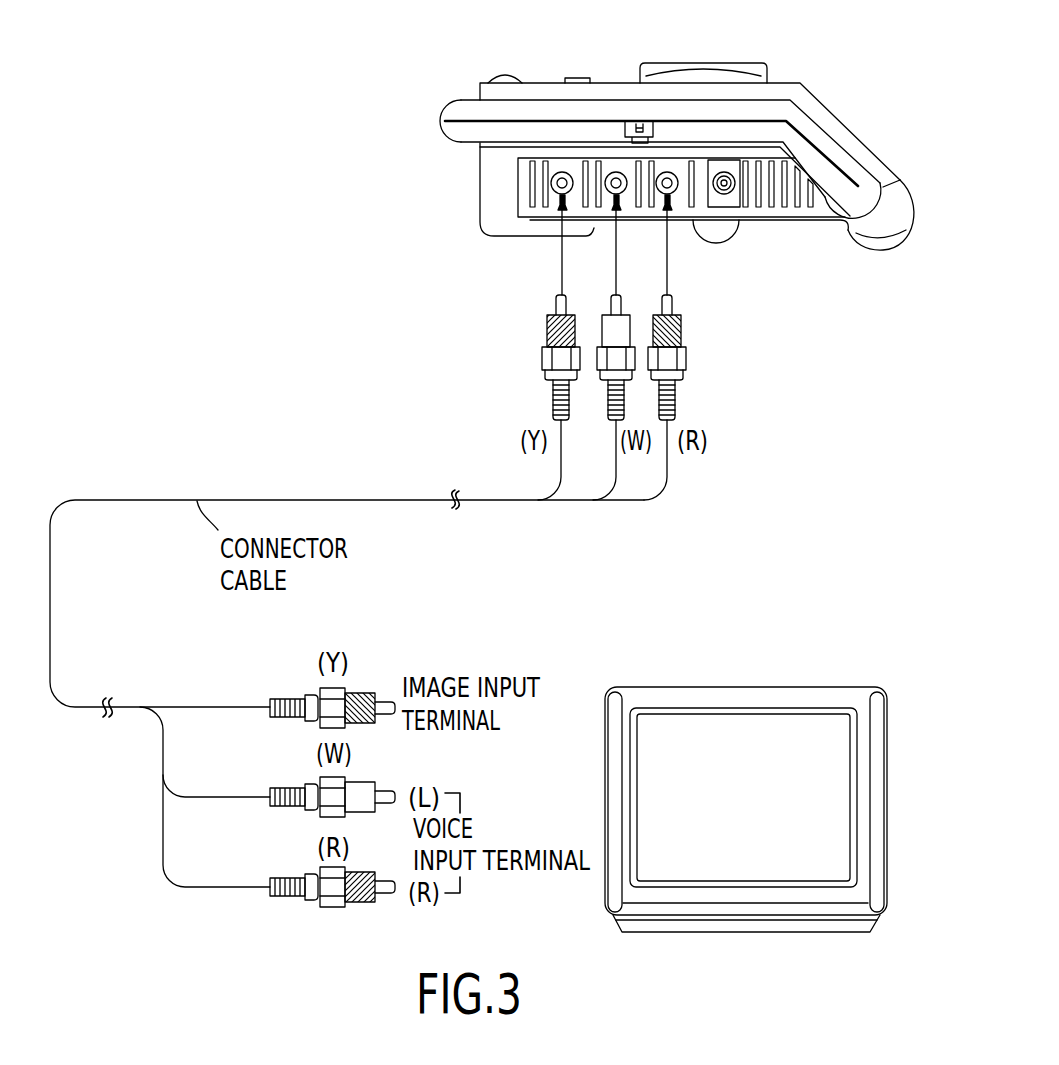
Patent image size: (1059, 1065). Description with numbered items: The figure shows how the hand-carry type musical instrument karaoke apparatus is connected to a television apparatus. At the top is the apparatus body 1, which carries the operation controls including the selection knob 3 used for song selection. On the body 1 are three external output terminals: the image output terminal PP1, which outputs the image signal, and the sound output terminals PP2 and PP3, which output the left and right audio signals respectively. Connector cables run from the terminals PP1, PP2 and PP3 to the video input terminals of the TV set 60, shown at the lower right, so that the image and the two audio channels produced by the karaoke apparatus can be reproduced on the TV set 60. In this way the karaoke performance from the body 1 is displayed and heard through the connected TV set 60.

The body 1 is at (860, 152).
The selection knob 3 is at (768, 78).
The image output terminal PP1 is at (557, 194).
The sound output terminal PP2 is at (605, 200).
The sound output terminal PP3 is at (672, 197).
The TV set 60 is at (770, 687).